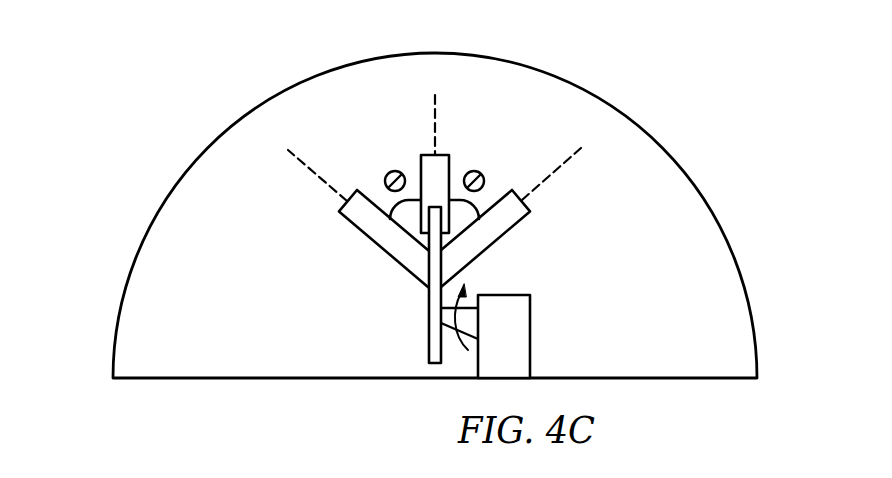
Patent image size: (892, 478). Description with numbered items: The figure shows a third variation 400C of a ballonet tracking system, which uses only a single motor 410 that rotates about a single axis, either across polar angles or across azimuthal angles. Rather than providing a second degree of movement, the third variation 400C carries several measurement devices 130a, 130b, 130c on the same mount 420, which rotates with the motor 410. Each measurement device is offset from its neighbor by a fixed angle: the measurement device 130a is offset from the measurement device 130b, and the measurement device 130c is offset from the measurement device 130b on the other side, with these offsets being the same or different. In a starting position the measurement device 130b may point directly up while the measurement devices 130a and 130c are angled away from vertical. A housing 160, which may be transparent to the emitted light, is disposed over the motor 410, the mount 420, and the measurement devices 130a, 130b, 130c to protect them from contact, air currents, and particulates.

The third variation 400C is at (603, 66).
The housing 160 is at (151, 222).
The measurement device 130a is at (523, 218).
The measurement device 130b is at (449, 161).
The measurement device 130c is at (357, 230).
The motor 410 is at (531, 330).
The mount 420 is at (428, 352).